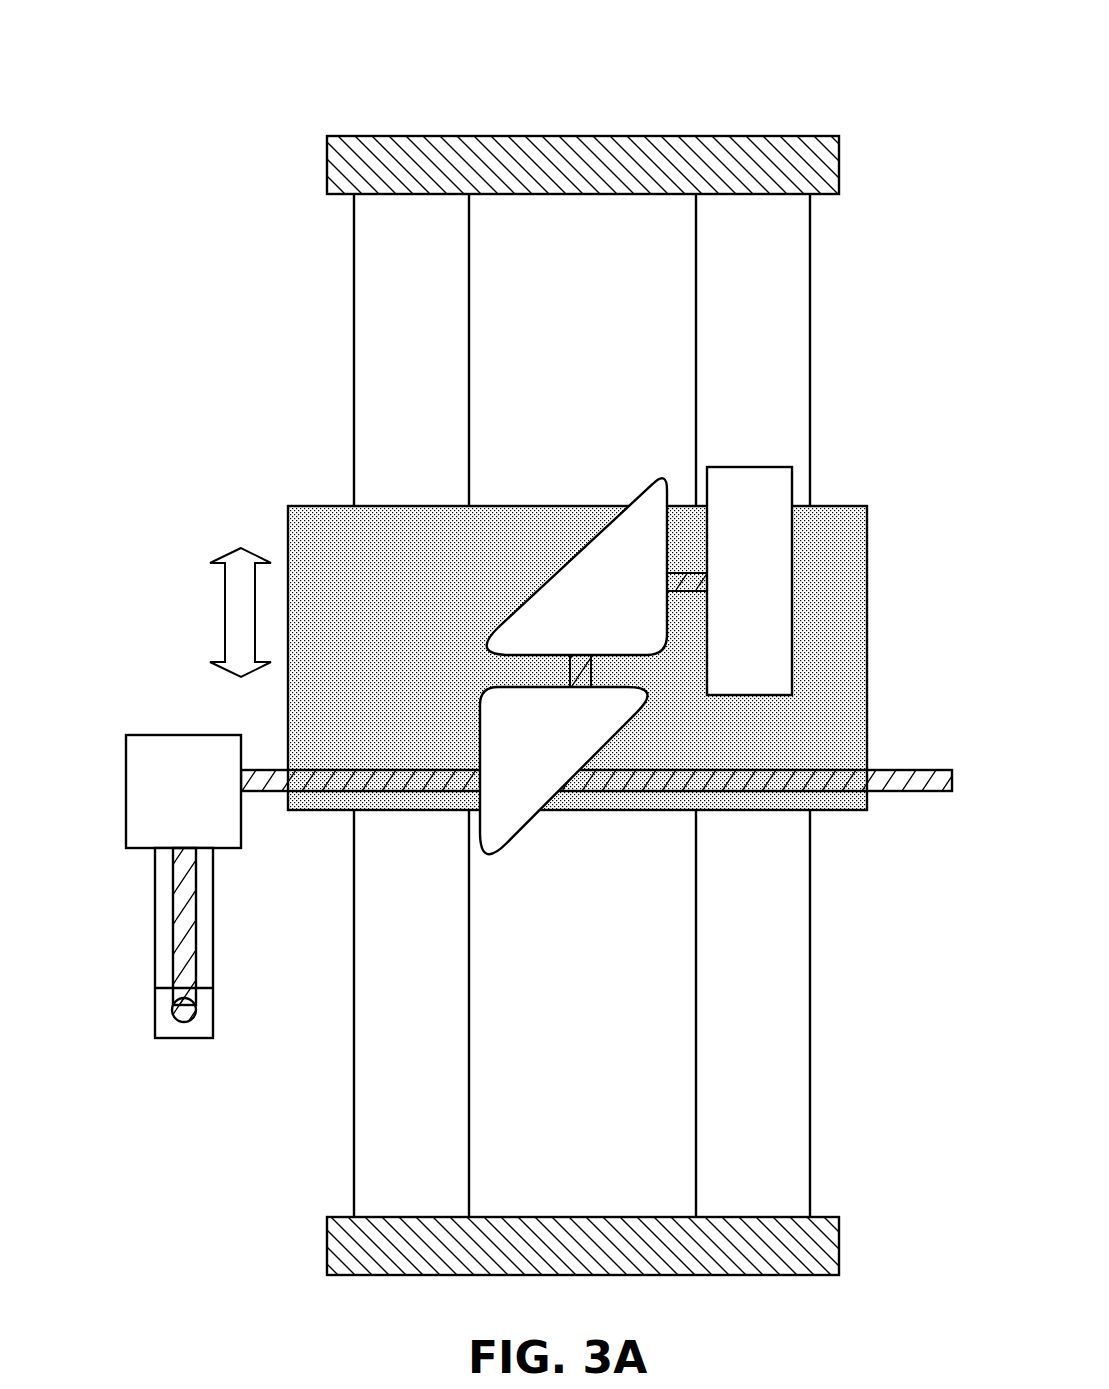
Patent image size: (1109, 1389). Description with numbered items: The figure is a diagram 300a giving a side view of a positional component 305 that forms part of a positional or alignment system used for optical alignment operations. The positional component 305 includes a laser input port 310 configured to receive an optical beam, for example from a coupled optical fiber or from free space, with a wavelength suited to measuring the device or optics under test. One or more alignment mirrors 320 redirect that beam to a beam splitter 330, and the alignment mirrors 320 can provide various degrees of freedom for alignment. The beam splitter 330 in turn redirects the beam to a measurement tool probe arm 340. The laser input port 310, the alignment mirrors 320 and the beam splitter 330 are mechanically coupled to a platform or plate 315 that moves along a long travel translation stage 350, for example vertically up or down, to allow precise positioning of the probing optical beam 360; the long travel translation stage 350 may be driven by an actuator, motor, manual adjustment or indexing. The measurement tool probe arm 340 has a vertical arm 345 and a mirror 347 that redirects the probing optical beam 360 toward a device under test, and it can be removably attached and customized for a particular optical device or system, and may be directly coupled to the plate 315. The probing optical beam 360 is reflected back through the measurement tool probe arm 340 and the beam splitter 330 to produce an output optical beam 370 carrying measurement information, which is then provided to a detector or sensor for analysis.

The diagram 300a is at (737, 47).
The positional component 305 is at (202, 324).
The laser input port 310 is at (771, 593).
The plate 315 is at (393, 590).
The alignment mirror 320 is at (619, 603).
The beam splitter 330 is at (562, 775).
The measurement tool probe arm 340 is at (205, 803).
The vertical arm 345 is at (186, 967).
The mirror 347 is at (216, 1015).
The long travel translation stage 350 is at (790, 350).
The probing optical beam 360 is at (170, 1006).
The output optical beam 370 is at (915, 770).